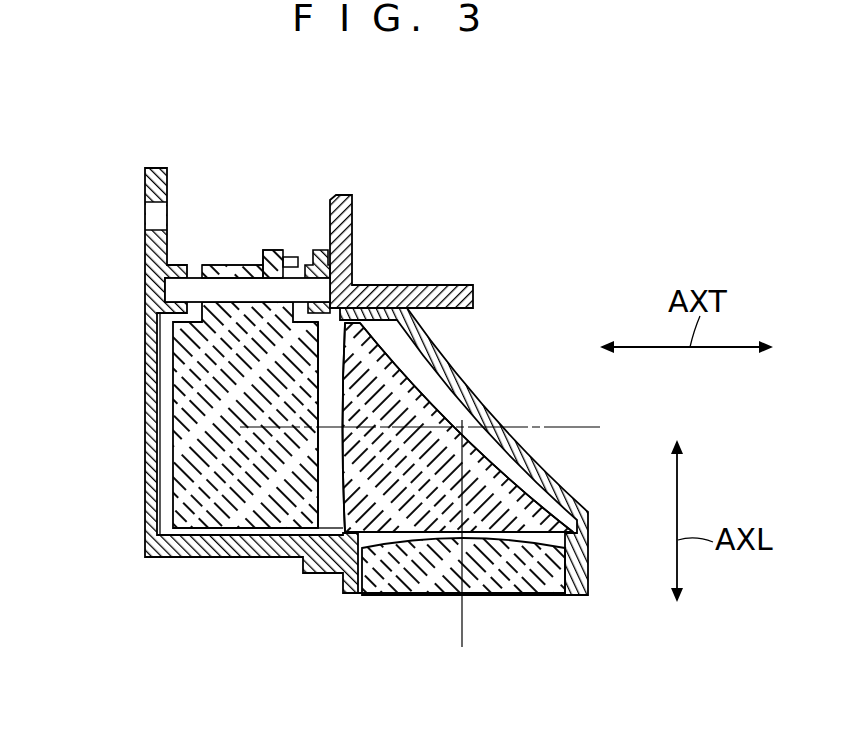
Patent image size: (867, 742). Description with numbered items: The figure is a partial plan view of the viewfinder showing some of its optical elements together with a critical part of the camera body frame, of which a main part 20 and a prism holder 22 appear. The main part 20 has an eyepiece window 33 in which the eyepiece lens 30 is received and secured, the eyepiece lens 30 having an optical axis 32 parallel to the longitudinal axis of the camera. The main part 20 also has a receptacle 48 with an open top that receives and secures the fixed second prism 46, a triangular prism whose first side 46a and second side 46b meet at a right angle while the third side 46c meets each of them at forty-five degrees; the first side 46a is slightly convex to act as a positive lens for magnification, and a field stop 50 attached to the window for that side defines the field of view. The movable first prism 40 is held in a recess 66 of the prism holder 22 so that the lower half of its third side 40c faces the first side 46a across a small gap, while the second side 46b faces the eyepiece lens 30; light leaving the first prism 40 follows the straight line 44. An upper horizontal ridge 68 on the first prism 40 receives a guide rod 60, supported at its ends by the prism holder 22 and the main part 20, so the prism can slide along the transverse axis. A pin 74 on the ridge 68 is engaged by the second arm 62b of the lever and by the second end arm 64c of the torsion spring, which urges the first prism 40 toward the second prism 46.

The main part 20 is at (441, 285).
The prism holder 22 is at (145, 403).
The eyepiece lens 30 is at (541, 590).
The optical axis 32 is at (460, 630).
The eyepiece window 33 is at (380, 593).
The first prism 40 is at (193, 478).
The third functional side 40c is at (318, 350).
The straight line 44 is at (265, 428).
The second prism 46 is at (505, 455).
The first functional side 46a is at (400, 452).
The second functional side 46b is at (499, 528).
The third functional side 46c is at (470, 385).
The receptacle 48 is at (408, 357).
The field stop 50 is at (324, 524).
The guide rod 60 is at (177, 293).
The second arm 62b is at (291, 257).
The second end arm 64c is at (250, 265).
The recess 66 is at (161, 435).
The upper horizontal ridge 68 is at (230, 270).
The pin 74 is at (273, 250).